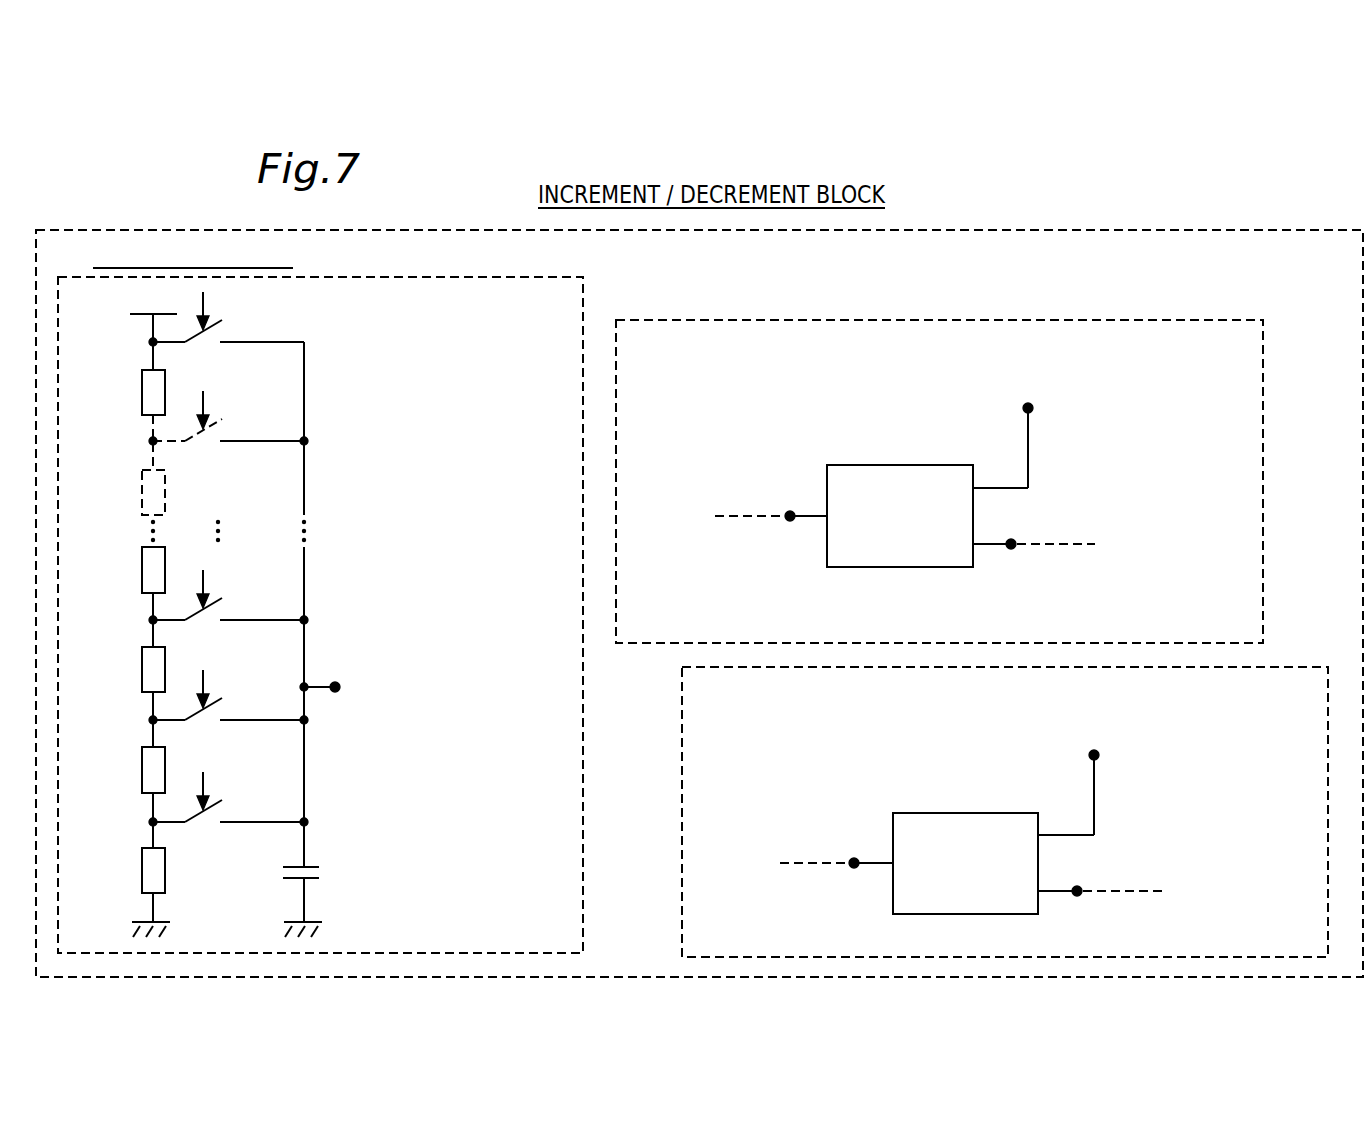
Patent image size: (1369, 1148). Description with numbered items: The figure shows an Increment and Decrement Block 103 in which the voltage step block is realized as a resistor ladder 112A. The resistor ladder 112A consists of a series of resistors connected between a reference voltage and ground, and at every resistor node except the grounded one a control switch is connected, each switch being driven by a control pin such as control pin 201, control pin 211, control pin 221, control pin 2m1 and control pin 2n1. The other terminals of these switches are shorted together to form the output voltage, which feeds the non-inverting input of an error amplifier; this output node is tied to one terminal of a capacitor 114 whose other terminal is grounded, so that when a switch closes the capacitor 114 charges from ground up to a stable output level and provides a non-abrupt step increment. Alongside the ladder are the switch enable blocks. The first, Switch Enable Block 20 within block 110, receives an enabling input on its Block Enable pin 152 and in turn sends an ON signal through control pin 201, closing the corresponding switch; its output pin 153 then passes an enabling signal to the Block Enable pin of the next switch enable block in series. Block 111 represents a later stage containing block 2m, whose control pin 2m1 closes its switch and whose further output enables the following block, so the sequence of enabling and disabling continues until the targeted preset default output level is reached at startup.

The Increment and Decrement Block 103 is at (1270, 223).
The Switch Enable Block 110 is at (1272, 340).
The switch enable block unit 111 is at (1290, 658).
The resistor ladder 112A is at (592, 318).
The control pin 2n1 is at (207, 304).
The control pin 2m1 is at (207, 403).
The switch 221 is at (207, 582).
The control pin 211 is at (207, 682).
The control pin 201 is at (207, 782).
The capacitor 114 is at (322, 871).
The Switch Enable Block 20 is at (897, 464).
The Block Enable pin 152 is at (811, 520).
The output pin 153 is at (1008, 554).
The block 2m is at (965, 811).